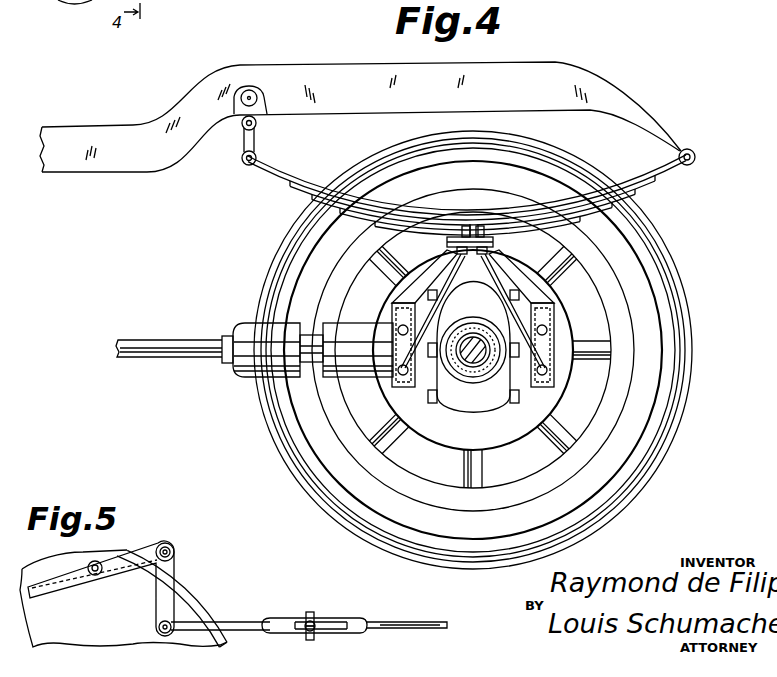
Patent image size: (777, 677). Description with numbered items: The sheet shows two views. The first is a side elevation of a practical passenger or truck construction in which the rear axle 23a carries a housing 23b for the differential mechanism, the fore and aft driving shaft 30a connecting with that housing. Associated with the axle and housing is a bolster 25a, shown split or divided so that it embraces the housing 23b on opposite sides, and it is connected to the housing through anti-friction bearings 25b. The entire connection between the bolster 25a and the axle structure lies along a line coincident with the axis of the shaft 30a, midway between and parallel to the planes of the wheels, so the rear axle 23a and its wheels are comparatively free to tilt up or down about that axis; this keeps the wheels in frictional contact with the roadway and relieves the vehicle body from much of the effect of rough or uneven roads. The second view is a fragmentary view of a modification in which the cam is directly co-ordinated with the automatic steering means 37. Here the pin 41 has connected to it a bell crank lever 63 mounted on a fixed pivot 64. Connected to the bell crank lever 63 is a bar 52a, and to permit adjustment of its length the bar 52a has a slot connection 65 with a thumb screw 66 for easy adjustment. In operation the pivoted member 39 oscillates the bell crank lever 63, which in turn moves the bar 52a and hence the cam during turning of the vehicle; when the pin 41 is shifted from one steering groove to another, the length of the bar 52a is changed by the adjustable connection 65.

In FIG. 4, the rear axle 23a is at (475, 405).
In FIG. 4, the housing 23b is at (470, 356).
In FIG. 4, the bolster 25a is at (507, 283).
In FIG. 4, the anti-friction bearings 25b is at (392, 383).
In FIG. 4, the fore and aft driving shaft 30a is at (173, 350).
In FIG. 5, the automatic steering means 37 is at (203, 609).
In FIG. 5, the member 39 is at (47, 592).
In FIG. 5, the pin 41 is at (97, 575).
In FIG. 5, the bell crank lever 63 is at (175, 568).
In FIG. 5, the fixed pivot 64 is at (169, 542).
In FIG. 5, the slot connection 65 is at (305, 611).
In FIG. 5, the thumb screw 66 is at (317, 634).
In FIG. 5, the bar 52a is at (410, 628).